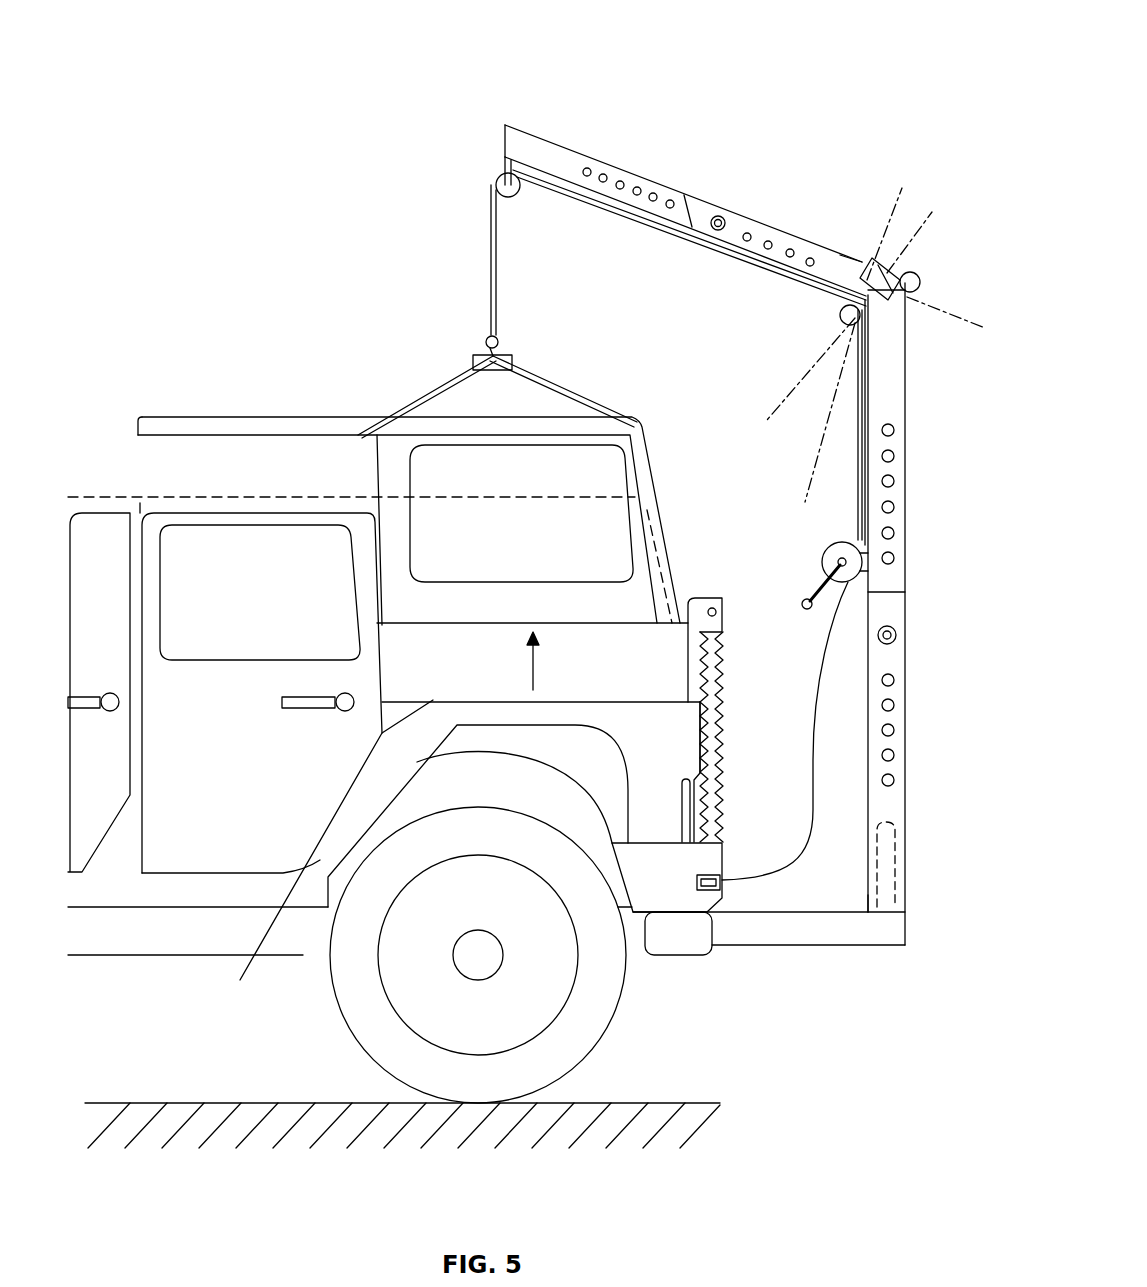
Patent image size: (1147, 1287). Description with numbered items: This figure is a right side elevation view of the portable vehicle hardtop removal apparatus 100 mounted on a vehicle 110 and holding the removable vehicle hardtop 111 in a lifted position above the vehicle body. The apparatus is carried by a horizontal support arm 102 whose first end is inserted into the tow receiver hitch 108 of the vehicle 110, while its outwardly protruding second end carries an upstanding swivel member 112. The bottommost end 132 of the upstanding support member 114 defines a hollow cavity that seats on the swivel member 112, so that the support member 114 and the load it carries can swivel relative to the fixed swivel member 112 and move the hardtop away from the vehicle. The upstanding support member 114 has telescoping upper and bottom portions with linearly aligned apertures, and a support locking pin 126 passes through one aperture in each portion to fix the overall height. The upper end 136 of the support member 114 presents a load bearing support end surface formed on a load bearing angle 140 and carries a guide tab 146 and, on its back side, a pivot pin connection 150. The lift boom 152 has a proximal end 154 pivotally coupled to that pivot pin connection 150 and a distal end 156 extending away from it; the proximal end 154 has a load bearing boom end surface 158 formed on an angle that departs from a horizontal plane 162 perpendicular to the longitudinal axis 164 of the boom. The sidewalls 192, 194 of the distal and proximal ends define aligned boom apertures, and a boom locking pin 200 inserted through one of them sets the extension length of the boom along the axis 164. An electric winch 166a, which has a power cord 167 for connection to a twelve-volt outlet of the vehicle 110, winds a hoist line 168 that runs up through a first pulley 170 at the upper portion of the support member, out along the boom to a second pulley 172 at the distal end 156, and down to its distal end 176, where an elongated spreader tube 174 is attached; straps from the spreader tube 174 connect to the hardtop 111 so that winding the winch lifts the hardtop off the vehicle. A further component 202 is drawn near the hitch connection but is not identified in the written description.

The portable vehicle hardtop removal apparatus 100 is at (618, 30).
The horizontal support arm 102 is at (795, 933).
The tow receiver hitch 108 is at (665, 945).
The vehicle 110 is at (320, 858).
The removable vehicle hardtop 111 is at (315, 417).
The upstanding swivel member 112 is at (890, 857).
The upstanding support member 114 is at (890, 598).
The support locking pin 126 is at (897, 630).
The bottommost end 132 is at (900, 898).
The upper end 136 is at (887, 393).
The load bearing angle 140 is at (787, 390).
The guide tab 146 is at (897, 192).
The pivot pin connection 150 is at (912, 274).
The lift boom 152 is at (690, 200).
The proximal end 154 is at (828, 262).
The distal end 156 is at (512, 140).
The load bearing boom end surface 158 is at (860, 275).
The horizontal plane 162 is at (790, 492).
The longitudinal axis 164 is at (962, 318).
The electric winch 166a is at (832, 560).
The power cord 167 is at (814, 742).
The hoist line 168 is at (848, 520).
The first pulley 170 is at (847, 313).
The second pulley 172 is at (520, 195).
The elongated spreader tube 174 is at (495, 370).
The distal end 176 is at (486, 328).
The sidewall 192 is at (612, 170).
The sidewall 194 is at (760, 225).
The boom locking pin 200 is at (722, 215).
The ratchet strap 202 is at (722, 892).